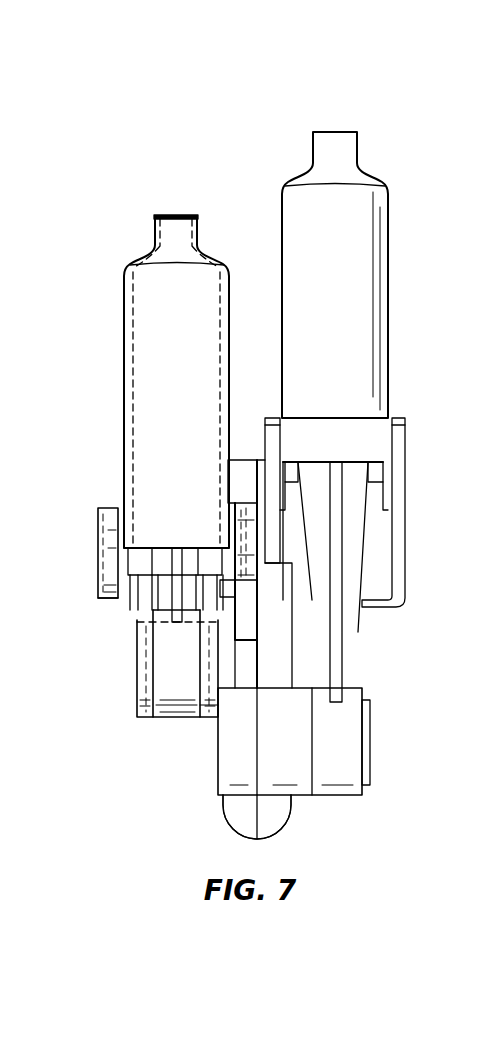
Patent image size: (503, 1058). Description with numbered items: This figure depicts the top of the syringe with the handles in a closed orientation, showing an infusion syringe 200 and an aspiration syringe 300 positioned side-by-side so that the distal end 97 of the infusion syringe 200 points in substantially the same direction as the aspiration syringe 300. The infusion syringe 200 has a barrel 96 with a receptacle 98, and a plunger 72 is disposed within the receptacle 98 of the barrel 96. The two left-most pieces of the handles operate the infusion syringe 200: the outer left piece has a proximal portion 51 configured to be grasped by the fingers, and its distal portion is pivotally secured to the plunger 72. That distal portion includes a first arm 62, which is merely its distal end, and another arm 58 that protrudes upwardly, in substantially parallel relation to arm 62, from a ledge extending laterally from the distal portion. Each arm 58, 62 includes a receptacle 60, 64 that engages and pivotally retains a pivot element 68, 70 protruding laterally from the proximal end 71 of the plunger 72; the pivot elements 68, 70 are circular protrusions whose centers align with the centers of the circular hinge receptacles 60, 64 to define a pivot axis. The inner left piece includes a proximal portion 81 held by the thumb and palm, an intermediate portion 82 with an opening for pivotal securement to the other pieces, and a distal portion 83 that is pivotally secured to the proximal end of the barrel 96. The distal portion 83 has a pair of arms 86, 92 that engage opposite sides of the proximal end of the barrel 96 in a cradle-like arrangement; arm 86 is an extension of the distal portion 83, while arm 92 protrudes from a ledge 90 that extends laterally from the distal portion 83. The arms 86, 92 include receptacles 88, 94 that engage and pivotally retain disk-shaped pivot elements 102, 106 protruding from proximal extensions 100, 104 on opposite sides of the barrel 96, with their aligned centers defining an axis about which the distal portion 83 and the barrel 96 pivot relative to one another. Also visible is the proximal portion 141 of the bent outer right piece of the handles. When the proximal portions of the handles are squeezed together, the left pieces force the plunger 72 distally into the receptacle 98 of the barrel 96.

The infusion syringe 200 is at (146, 166).
The aspiration syringe 300 is at (356, 106).
The barrel 96 is at (114, 310).
The distal end 97 is at (172, 217).
The receptacle 98 is at (162, 287).
The proximal portion 51 is at (243, 465).
The proximal portion 141 is at (280, 468).
The pivot element 102 is at (393, 605).
The arm 86 is at (257, 522).
The receptacle 88 is at (263, 537).
The proximal extension 100 is at (257, 547).
The receptacle 94 is at (98, 525).
The pivot element 106 is at (98, 548).
The proximal extension 104 is at (98, 590).
The arm 92 is at (105, 600).
The ledge 90 is at (140, 559).
The plunger 72 is at (163, 568).
The receptacle 64 is at (145, 622).
The receptacle 60 is at (138, 640).
The pivot element 68 is at (135, 678).
The arm 58 is at (133, 700).
The proximal end 71 is at (185, 700).
The pivot element 70 is at (186, 712).
The first arm 62 is at (205, 716).
The intermediate portion 82 is at (243, 670).
The distal portion 83 is at (245, 623).
The proximal portion 81 is at (233, 817).